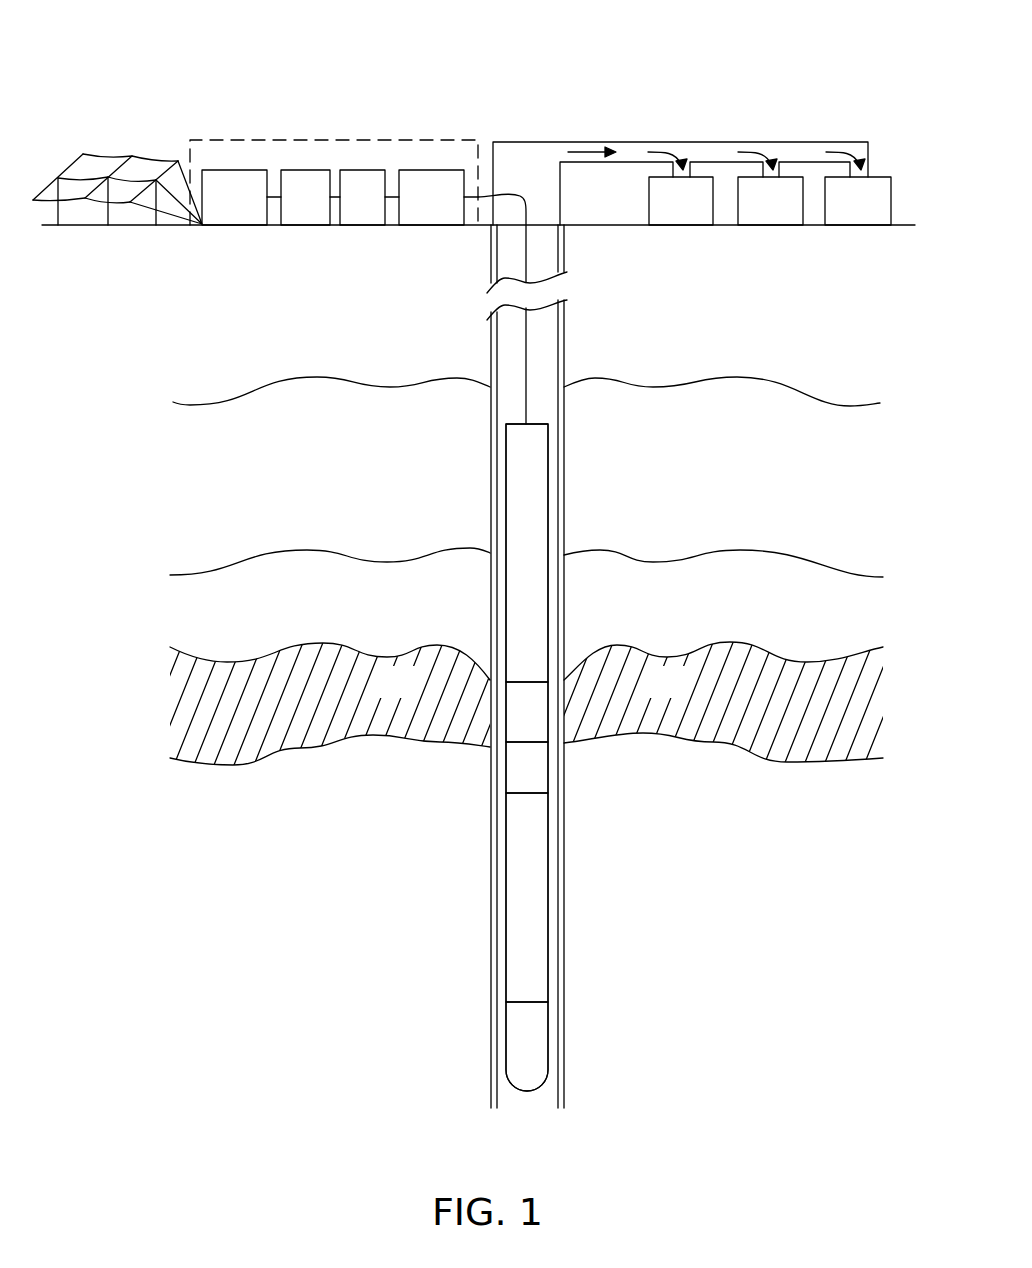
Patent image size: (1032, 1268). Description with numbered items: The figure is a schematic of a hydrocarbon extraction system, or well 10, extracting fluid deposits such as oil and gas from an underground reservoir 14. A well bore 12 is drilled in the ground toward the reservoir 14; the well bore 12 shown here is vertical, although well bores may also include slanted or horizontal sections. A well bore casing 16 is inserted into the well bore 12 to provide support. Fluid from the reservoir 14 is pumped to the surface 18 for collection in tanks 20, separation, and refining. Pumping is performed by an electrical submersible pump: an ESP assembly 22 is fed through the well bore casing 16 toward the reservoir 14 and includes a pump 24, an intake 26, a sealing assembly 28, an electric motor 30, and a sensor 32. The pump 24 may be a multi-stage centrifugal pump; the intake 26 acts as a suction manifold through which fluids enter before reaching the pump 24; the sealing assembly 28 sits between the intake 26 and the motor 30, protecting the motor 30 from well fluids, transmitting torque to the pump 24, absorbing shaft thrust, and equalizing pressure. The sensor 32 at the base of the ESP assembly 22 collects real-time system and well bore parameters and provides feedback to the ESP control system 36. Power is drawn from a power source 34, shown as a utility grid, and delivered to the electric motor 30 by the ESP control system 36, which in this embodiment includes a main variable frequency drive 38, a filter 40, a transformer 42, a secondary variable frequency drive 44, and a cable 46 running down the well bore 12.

The well 10 is at (658, 50).
The well bore 12 is at (555, 389).
The underground reservoir 14 is at (408, 695).
The well bore casing 16 is at (490, 343).
The surface 18 is at (597, 223).
The tanks 20 is at (682, 228).
The ESP assembly 22 is at (165, 420).
The pump 24 is at (548, 463).
The intake 26 is at (506, 712).
The sealing assembly 28 is at (506, 767).
The electric motor 30 is at (548, 868).
The sensor 32 is at (548, 1038).
The power source 34 is at (143, 128).
The ESP control system 36 is at (432, 140).
The main variable frequency drive 38 is at (220, 217).
The filter 40 is at (302, 170).
The transformer 42 is at (358, 170).
The secondary variable frequency drive 44 is at (417, 217).
The cable 46 is at (525, 185).